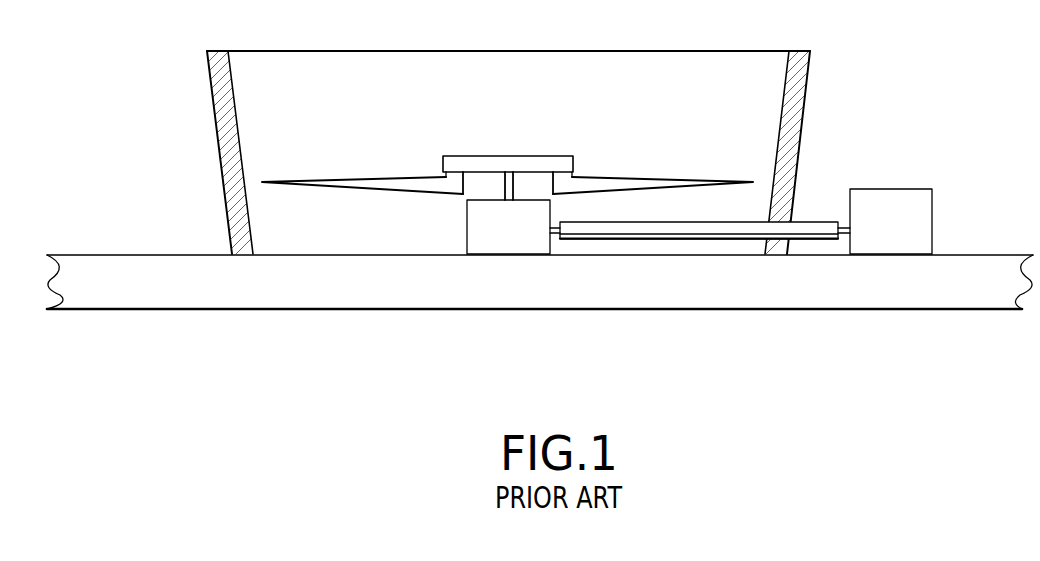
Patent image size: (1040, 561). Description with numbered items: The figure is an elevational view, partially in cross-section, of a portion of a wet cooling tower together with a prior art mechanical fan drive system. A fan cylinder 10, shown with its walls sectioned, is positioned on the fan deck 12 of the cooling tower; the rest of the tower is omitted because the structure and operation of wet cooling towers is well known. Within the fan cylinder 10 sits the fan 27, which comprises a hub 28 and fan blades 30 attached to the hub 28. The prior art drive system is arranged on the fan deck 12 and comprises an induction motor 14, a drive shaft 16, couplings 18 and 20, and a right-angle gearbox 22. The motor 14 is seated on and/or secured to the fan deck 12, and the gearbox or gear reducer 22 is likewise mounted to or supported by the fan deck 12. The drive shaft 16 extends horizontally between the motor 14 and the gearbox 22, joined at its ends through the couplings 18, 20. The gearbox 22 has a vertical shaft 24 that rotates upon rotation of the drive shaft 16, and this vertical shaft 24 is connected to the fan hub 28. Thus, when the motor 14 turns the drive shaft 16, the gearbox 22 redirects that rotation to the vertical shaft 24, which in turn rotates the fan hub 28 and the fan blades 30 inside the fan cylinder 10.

The fan cylinder 10 is at (806, 88).
The fan deck 12 is at (668, 295).
The induction motor 14 is at (933, 210).
The drive shaft 16 is at (810, 222).
The coupling 18 is at (847, 234).
The coupling 20 is at (553, 233).
The right-angle gearbox 22 is at (467, 235).
The vertical shaft 24 is at (503, 183).
The fan 27 is at (497, 156).
The hub 28 is at (537, 157).
The fan blades 30 is at (340, 178).